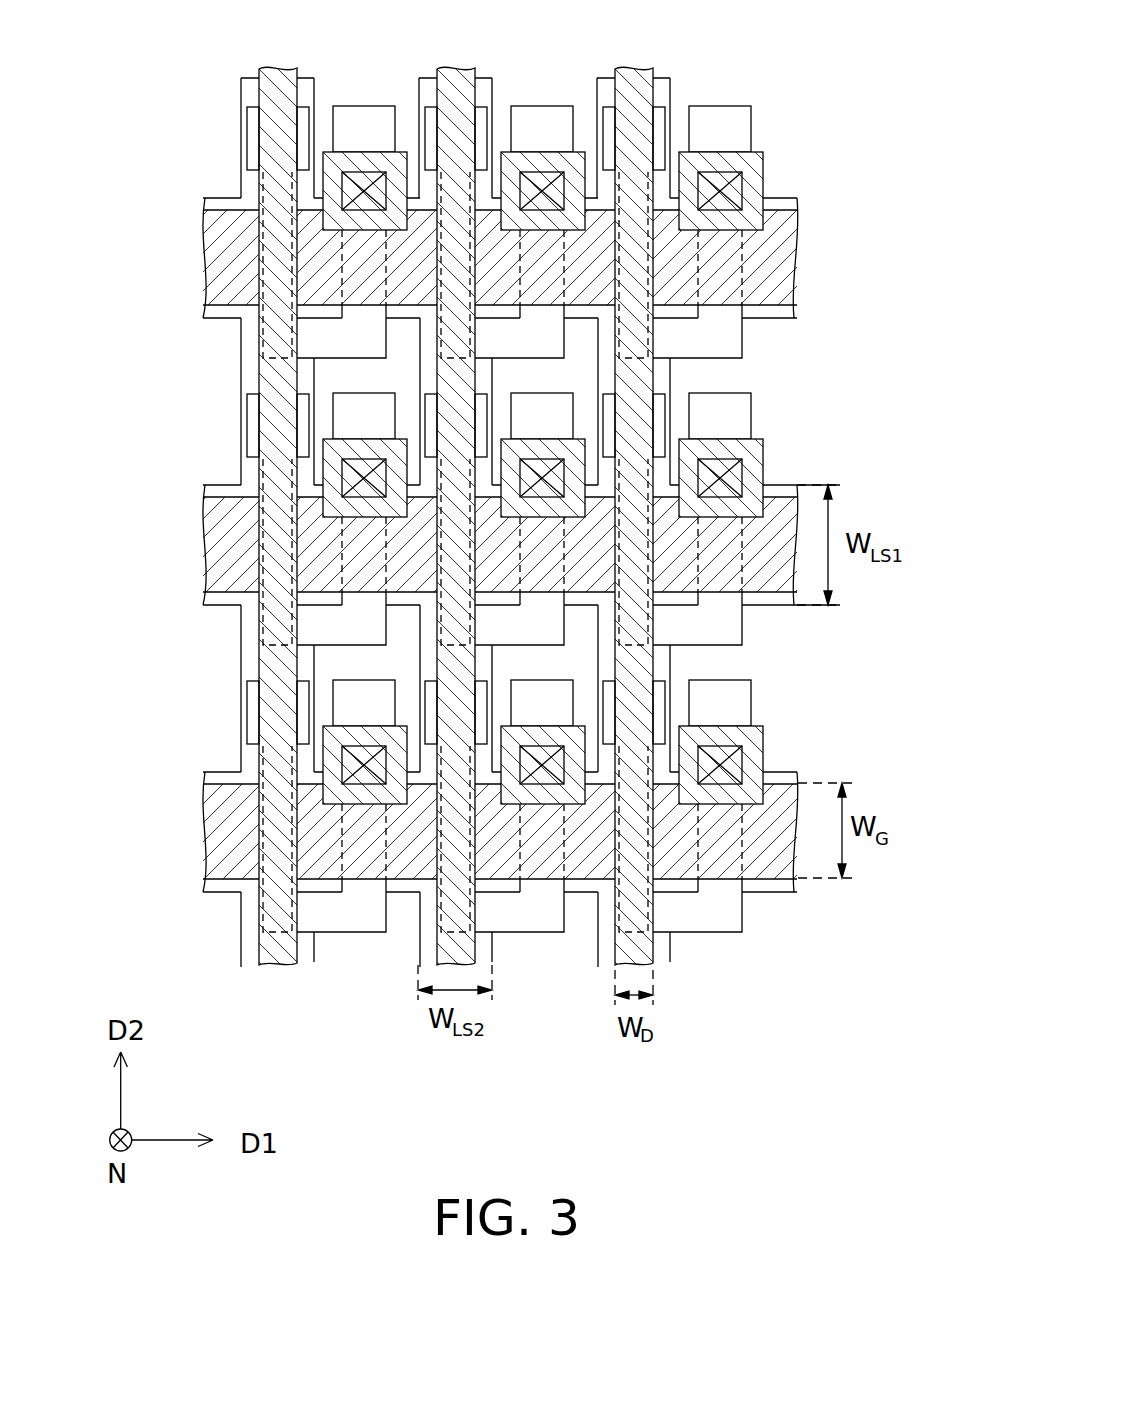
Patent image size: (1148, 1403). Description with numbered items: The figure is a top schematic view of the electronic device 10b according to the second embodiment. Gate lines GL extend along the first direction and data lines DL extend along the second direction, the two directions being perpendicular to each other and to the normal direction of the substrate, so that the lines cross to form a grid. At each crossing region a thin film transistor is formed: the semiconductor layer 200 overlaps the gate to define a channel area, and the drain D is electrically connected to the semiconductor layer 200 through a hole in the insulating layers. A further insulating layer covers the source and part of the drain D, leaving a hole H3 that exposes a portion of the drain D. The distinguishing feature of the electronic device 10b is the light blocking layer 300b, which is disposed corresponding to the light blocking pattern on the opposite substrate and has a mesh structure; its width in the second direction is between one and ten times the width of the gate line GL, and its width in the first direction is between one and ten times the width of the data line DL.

The gate line GL is at (222, 248).
The data line DL is at (278, 78).
The light blocking layer 300b is at (370, 108).
The semiconductor layer 200 is at (255, 147).
The drain D is at (405, 154).
The hole H3 is at (342, 175).
The electronic device 10b is at (872, 1075).